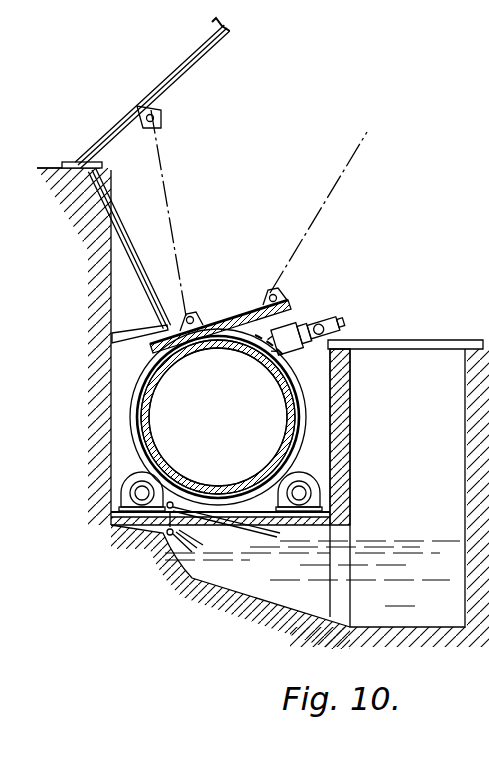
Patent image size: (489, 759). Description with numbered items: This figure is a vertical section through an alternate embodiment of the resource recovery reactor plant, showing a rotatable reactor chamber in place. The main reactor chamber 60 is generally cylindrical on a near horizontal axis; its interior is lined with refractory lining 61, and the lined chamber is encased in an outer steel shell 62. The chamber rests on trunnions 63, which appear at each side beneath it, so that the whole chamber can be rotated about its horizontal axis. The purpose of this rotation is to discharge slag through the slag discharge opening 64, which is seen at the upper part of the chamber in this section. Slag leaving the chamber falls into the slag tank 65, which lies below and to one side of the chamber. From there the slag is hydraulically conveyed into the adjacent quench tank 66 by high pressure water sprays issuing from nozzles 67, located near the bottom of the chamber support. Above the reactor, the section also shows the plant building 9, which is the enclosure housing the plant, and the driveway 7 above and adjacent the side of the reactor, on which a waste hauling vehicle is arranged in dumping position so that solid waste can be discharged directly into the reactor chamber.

The driveway 7 is at (47, 168).
The plant building 9 is at (138, 92).
The main reactor chamber 60 is at (233, 436).
The refractory lining 61 is at (290, 412).
The steel shell 62 is at (130, 392).
The trunnions 63 is at (120, 494).
The slag discharge opening 64 is at (256, 340).
The slag tank 65 is at (275, 596).
The quench tank 66 is at (421, 429).
The nozzles 67 is at (165, 530).